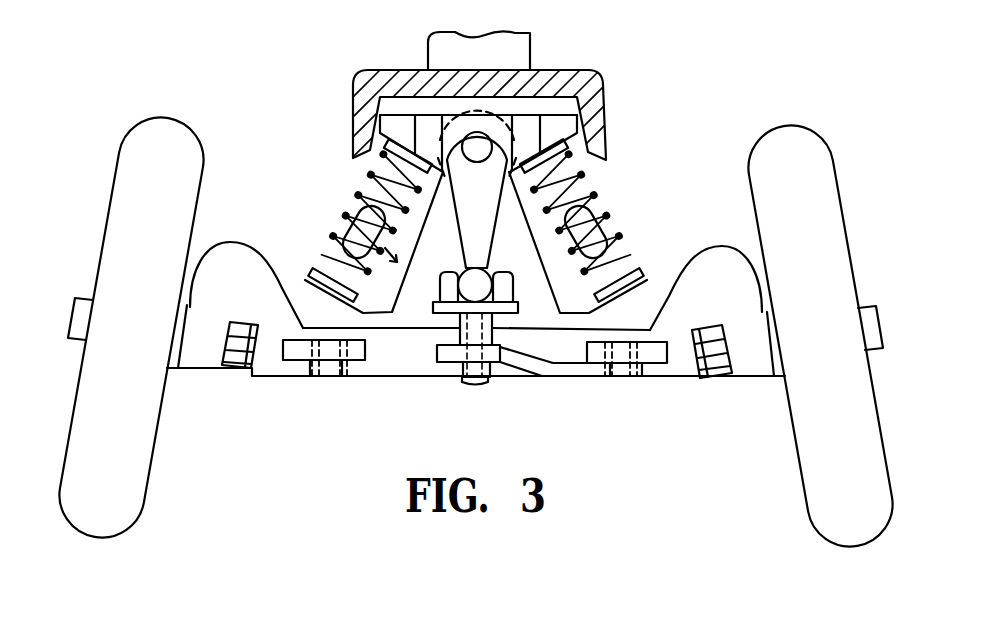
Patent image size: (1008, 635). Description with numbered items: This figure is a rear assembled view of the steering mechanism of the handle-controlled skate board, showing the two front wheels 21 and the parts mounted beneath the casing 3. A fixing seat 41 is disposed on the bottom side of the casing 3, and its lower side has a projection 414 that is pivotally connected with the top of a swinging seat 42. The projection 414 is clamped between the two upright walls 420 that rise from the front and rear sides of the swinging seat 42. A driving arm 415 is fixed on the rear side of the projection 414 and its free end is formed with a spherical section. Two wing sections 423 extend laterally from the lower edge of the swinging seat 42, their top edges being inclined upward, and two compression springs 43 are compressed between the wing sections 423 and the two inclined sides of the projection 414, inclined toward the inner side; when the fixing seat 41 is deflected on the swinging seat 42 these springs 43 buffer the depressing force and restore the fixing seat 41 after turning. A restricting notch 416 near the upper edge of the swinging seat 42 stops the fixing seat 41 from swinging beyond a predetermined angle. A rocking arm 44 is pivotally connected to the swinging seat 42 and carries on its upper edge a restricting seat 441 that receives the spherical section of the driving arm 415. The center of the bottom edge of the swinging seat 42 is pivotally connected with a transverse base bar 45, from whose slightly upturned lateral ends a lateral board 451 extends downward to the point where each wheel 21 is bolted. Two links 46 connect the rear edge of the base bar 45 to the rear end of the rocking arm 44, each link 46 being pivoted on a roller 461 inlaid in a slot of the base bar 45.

The casing 3 is at (583, 83).
The wheel 21 is at (163, 137).
The fixing seat 41 is at (563, 101).
The projection 414 is at (560, 133).
The driving arm 415 is at (480, 190).
The restricting notch 416 is at (485, 192).
The swinging seat 42 is at (362, 201).
The upright wall 420 is at (522, 238).
The wing section 423 is at (291, 281).
The compression spring 43 is at (358, 196).
The rocking arm 44 is at (453, 330).
The restricting seat 441 is at (513, 288).
The base bar 45 is at (268, 357).
The lateral board 451 is at (197, 353).
The link 46 is at (377, 370).
The roller 461 is at (317, 362).